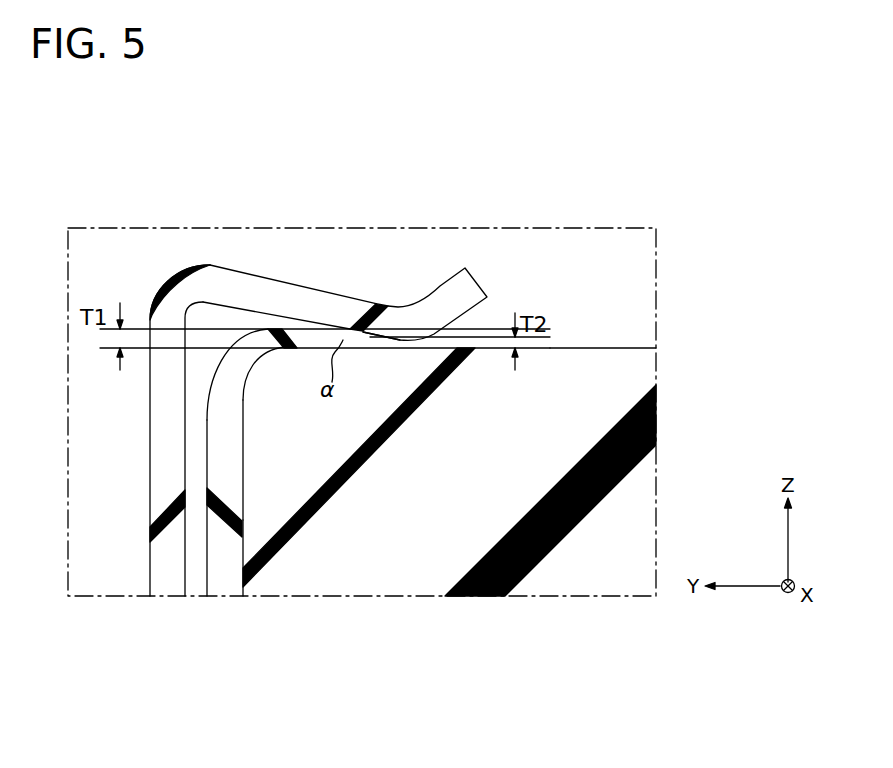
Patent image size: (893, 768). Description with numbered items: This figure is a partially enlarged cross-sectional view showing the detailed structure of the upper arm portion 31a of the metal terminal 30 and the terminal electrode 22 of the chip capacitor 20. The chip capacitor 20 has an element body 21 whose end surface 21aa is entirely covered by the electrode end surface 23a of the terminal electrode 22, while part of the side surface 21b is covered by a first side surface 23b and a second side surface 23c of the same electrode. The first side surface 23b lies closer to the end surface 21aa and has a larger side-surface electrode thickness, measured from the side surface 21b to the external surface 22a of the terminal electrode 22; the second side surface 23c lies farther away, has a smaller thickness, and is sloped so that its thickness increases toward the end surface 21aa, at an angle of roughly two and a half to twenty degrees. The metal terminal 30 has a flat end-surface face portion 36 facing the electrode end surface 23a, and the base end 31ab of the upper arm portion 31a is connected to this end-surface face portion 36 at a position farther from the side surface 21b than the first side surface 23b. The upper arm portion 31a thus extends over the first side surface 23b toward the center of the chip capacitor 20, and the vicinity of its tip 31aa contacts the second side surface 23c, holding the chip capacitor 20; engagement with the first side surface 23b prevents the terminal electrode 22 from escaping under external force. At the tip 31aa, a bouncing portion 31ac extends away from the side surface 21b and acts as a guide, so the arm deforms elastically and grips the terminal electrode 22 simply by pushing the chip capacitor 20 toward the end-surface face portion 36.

The chip capacitor 20 is at (608, 262).
The element body 21 is at (580, 406).
The side surface 21b is at (588, 348).
The end surface 21aa is at (242, 547).
The terminal electrode 22 is at (203, 418).
The external surface 22a is at (290, 328).
The electrode end surface 23a is at (225, 485).
The first side surface 23b is at (305, 340).
The second side surface 23c is at (373, 340).
The metal terminal 30 is at (148, 293).
The upper arm portion 31a is at (323, 286).
The tip 31aa is at (480, 280).
The base end 31ab is at (170, 273).
The bouncing portion 31ac is at (437, 287).
The end-surface face portion 36 is at (163, 452).